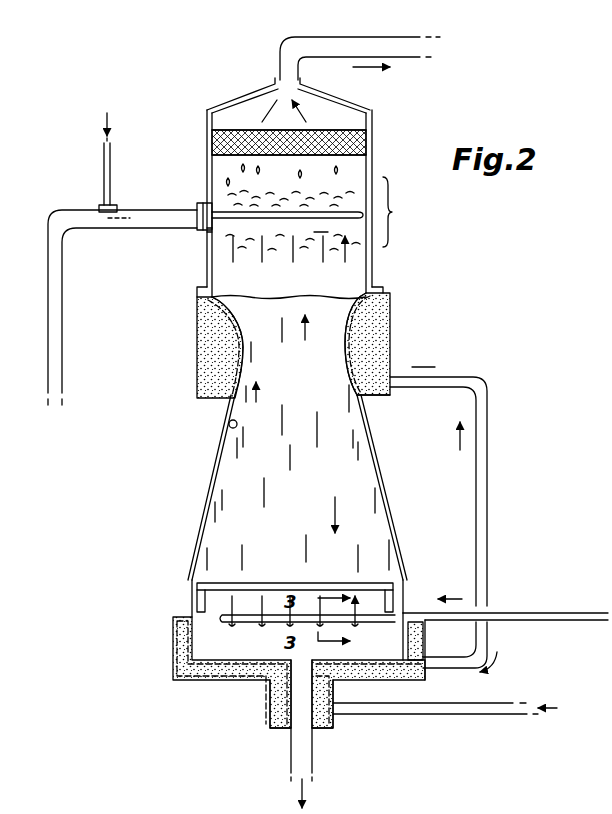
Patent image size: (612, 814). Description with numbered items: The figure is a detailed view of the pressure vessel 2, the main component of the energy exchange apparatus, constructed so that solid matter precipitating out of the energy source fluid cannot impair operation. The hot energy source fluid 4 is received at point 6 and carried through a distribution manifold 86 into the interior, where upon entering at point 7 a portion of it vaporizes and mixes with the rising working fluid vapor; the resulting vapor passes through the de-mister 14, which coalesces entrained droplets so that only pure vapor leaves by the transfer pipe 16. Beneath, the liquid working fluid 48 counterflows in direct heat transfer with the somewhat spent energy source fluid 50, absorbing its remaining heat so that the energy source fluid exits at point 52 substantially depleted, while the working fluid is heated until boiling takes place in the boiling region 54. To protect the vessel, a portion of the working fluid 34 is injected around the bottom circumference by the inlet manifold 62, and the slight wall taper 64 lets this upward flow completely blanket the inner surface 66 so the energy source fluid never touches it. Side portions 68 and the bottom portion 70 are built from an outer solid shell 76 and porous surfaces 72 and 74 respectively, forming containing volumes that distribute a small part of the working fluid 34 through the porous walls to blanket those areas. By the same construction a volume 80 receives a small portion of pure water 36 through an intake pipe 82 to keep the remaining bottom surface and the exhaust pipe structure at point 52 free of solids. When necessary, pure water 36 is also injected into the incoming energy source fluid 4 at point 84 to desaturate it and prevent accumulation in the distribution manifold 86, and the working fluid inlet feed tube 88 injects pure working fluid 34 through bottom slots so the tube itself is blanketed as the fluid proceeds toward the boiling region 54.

The pressure vessel 2 is at (392, 360).
The hot energy source fluid 4 is at (57, 263).
The inlet point 6 is at (212, 230).
The entry point 7 is at (318, 247).
The de-mister 14 is at (372, 134).
The transfer pipe 16 is at (357, 44).
The working fluid 34 is at (536, 609).
The water 36 is at (561, 705).
The liquid working fluid 48 is at (300, 547).
The energy source fluid 50 is at (385, 308).
The exit point 52 is at (305, 792).
The boiling region 54 is at (422, 217).
The inlet manifold 62 is at (197, 597).
The wall taper 64 is at (208, 501).
The inner surface 66 is at (229, 424).
The side portions 68 is at (370, 378).
The bottom portion 70 is at (410, 643).
The porous surface 72 is at (393, 337).
The porous surface 74 is at (388, 684).
The outer solid shell 76 is at (197, 362).
The volume 80 is at (272, 713).
The intake pipe 82 is at (490, 717).
The injection point 84 is at (130, 206).
The distribution manifold 86 is at (335, 212).
The working fluid inlet feed tube 88 is at (245, 626).